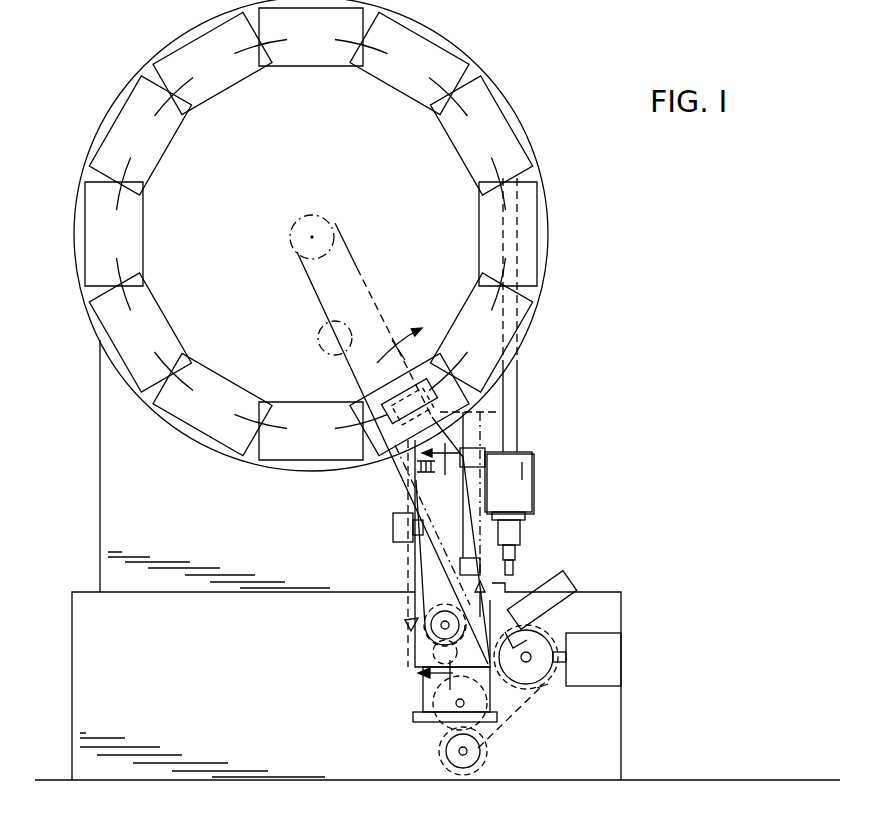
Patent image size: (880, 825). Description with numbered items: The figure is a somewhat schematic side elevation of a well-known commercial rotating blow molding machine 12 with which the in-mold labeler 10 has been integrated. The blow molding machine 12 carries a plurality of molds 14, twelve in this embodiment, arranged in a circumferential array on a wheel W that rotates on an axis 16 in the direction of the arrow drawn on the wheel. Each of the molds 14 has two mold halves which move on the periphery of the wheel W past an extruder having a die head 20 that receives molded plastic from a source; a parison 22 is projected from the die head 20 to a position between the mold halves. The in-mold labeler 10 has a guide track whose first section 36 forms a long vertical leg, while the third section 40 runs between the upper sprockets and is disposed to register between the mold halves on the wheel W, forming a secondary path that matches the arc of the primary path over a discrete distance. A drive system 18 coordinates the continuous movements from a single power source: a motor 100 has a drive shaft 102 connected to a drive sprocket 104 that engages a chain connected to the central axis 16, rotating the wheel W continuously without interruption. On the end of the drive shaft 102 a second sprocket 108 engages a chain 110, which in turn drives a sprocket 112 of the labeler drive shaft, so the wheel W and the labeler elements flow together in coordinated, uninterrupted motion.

The in-mold labeler 10 is at (384, 530).
The blow molding machine 12 is at (552, 231).
The molds 14 is at (200, 90).
The axis 16 is at (390, 439).
The drive system 18 is at (580, 626).
The die head 20 is at (518, 485).
The parison 22 is at (512, 375).
The first section of guide track means 36 is at (459, 512).
The third section of guide track means 40 is at (500, 412).
The motor 100 is at (613, 658).
The drive shaft 102 is at (550, 682).
The drive sprocket 104 is at (522, 585).
The second sprocket 108 is at (540, 685).
The chain 110 is at (516, 714).
The sprocket 112 is at (485, 752).
The wheel W is at (437, 133).